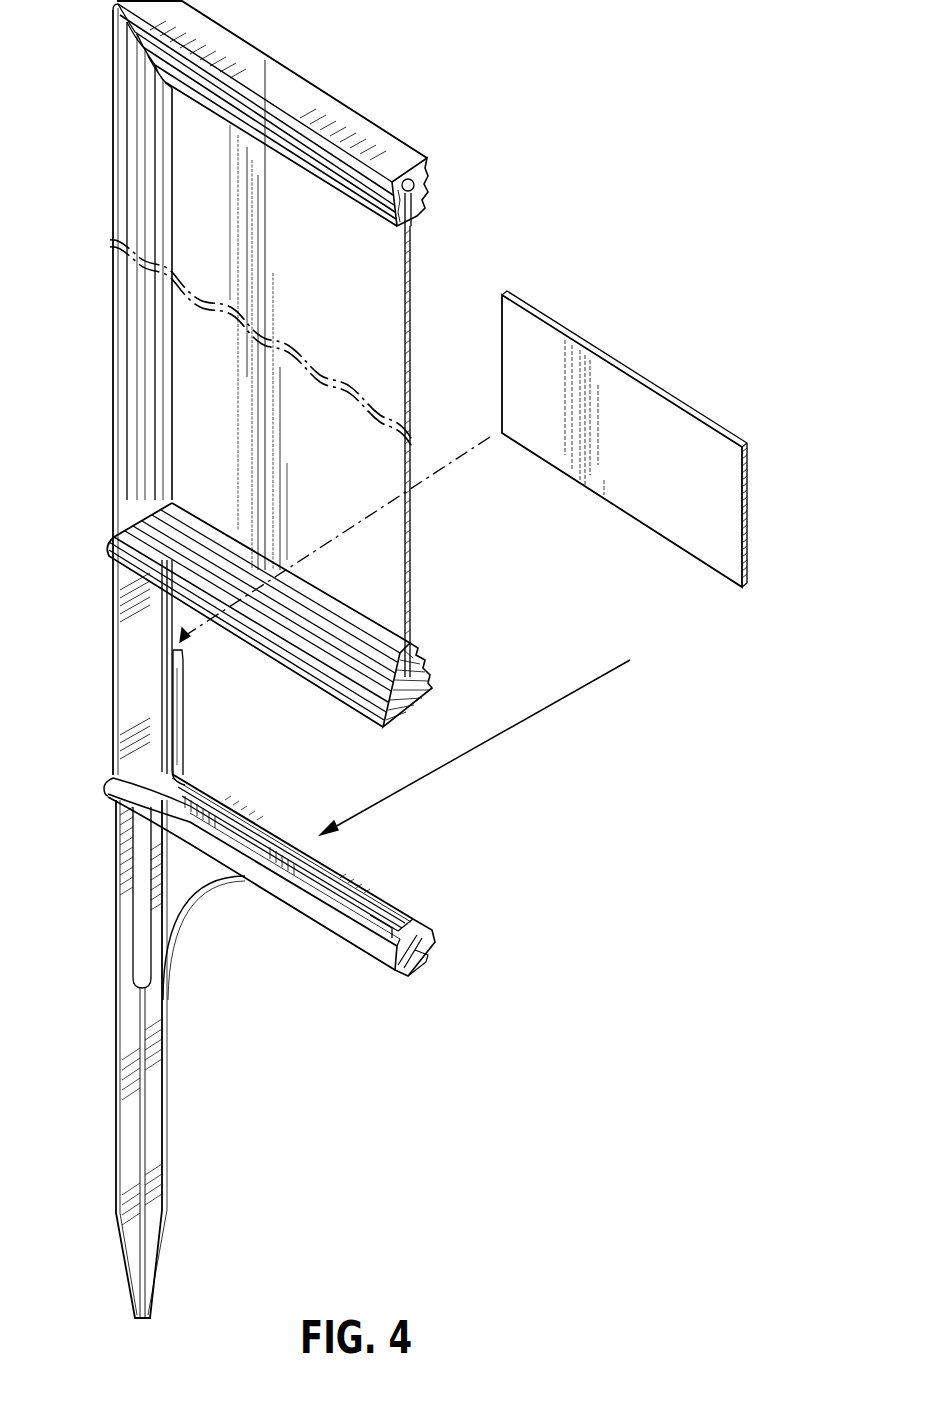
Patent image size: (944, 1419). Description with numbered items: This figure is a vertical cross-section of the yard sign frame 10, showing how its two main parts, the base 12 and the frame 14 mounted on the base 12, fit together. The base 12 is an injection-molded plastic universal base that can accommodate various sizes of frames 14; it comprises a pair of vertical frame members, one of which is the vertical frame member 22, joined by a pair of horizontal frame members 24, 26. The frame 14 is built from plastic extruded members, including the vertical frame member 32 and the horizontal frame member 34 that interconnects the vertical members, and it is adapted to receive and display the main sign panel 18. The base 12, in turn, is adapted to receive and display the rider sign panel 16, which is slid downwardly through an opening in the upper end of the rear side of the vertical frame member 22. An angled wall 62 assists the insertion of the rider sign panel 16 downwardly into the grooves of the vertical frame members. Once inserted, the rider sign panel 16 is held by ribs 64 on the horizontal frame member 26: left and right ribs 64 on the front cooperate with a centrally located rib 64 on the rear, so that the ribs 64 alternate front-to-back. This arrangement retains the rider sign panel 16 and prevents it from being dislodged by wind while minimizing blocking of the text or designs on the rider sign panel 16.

The yard sign frame 10 is at (636, 70).
The base 12 is at (455, 923).
The frame 14 is at (440, 661).
The rider sign panel 16 is at (644, 460).
The main sign panel 18 is at (320, 441).
The vertical frame member 22 is at (117, 1082).
The horizontal frame member 24 is at (420, 704).
The horizontal frame member 26 is at (420, 953).
The vertical frame member 32 is at (113, 370).
The horizontal frame member 34 is at (385, 135).
The angled wall 62 is at (178, 693).
The rib 64 is at (397, 915).